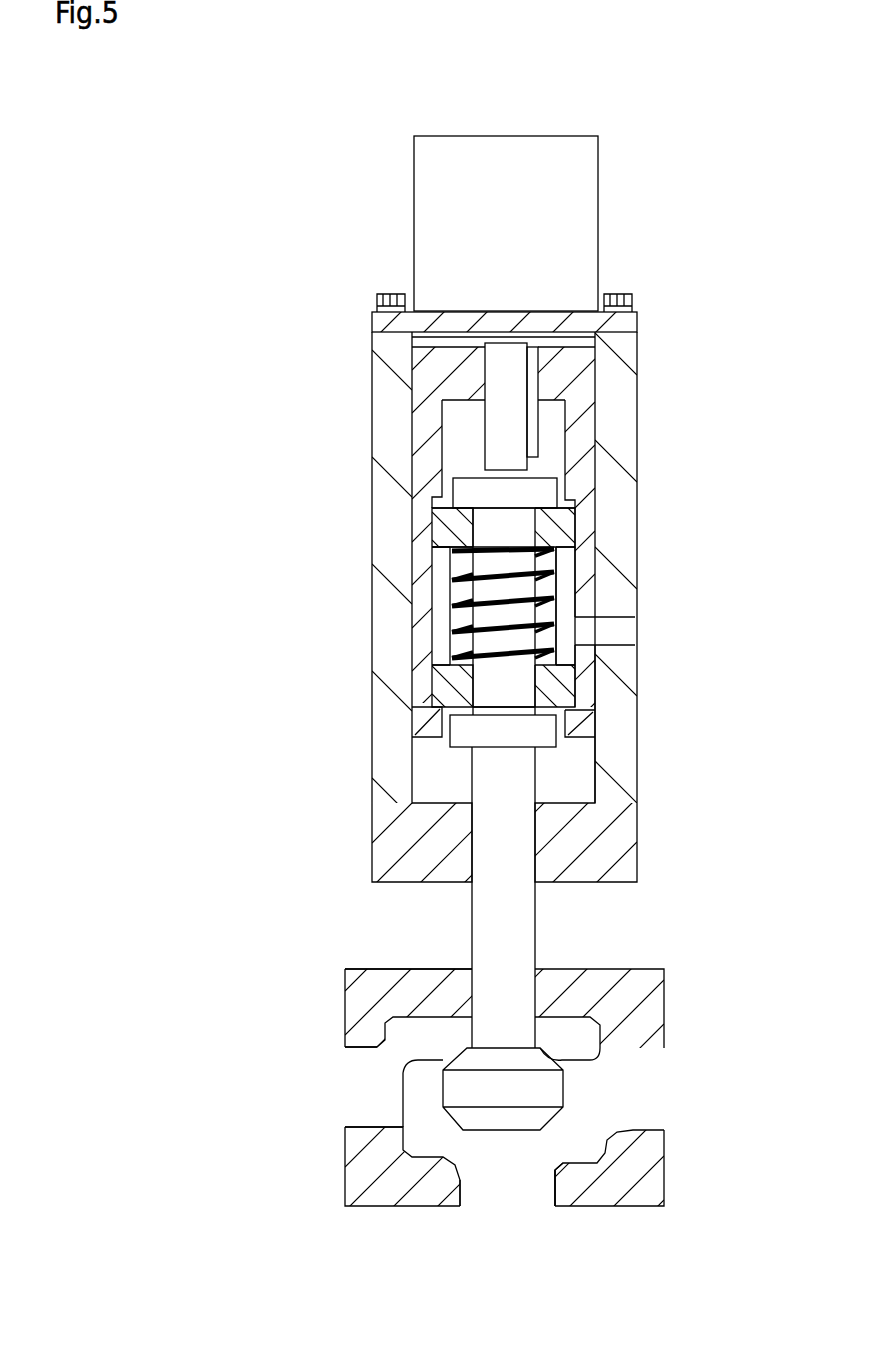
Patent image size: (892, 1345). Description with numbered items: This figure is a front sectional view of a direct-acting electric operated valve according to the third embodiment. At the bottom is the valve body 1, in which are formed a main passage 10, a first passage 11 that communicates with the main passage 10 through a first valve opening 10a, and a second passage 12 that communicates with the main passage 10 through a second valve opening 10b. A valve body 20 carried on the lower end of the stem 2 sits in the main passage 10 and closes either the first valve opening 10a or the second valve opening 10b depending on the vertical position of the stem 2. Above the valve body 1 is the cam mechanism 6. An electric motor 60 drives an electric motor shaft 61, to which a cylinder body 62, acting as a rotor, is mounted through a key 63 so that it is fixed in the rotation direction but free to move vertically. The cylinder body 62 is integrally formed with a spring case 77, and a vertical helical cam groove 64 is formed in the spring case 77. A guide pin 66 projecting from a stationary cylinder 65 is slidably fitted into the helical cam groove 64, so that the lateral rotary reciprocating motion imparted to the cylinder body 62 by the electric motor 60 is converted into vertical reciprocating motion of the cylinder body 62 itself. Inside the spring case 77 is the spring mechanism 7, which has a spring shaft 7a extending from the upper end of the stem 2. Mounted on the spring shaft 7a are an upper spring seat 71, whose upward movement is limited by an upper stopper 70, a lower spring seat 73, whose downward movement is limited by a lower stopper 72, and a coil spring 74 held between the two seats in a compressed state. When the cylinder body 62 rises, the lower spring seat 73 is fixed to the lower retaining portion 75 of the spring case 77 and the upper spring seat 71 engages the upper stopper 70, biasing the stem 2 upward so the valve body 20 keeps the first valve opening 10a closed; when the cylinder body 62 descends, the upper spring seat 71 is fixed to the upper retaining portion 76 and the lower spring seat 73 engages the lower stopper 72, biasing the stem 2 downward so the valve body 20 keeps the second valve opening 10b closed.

The valve body 1 is at (340, 1003).
The stem 2 is at (476, 941).
The cam mechanism 6 is at (596, 600).
The spring mechanism 7 is at (450, 591).
The spring shaft 7a is at (440, 545).
The main passage 10 is at (650, 1070).
The first valve opening 10a is at (542, 1056).
The second valve opening 10b is at (548, 1172).
The first passage 11 is at (358, 1073).
The second passage 12 is at (484, 1192).
The valve body 20 is at (460, 1095).
The electric motor 60 is at (583, 226).
The electric motor shaft 61 is at (512, 368).
The cylinder body 62 is at (580, 398).
The key 63 is at (600, 428).
The helical cam groove 64 is at (588, 582).
The stationary cylinder 65 is at (622, 672).
The guide pin 66 is at (618, 640).
The upper stopper 70 is at (542, 490).
The upper spring seat 71 is at (578, 538).
The lower stopper 72 is at (540, 733).
The lower spring seat 73 is at (566, 675).
The coil spring 74 is at (463, 632).
The lower retaining portion 75 is at (560, 700).
The upper retaining portion 76 is at (555, 512).
The spring case 77 is at (440, 704).